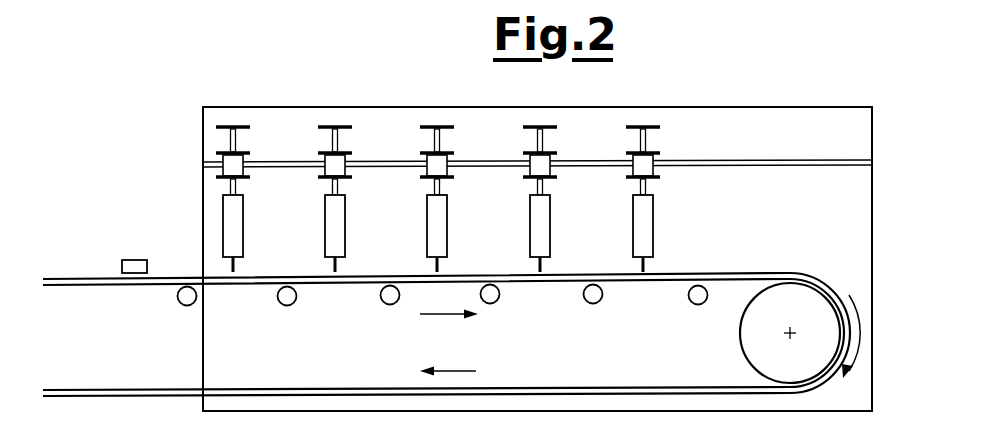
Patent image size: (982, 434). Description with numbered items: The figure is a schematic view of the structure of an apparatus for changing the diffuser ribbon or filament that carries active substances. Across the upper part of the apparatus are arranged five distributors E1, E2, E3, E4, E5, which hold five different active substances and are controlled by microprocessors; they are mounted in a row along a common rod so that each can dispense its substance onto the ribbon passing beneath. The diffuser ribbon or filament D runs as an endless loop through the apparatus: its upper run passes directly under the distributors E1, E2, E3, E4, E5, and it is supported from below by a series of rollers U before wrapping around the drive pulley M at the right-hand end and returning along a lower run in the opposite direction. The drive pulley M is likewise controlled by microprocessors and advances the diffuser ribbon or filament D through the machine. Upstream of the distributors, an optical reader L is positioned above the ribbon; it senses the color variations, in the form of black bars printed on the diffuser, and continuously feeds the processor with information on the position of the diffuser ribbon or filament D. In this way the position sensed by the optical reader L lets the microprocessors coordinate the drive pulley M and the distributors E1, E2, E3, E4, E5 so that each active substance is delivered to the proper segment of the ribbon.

The distributor E1 is at (222, 164).
The distributor E2 is at (332, 165).
The distributor E3 is at (433, 165).
The distributor E4 is at (533, 165).
The distributor E5 is at (653, 164).
The optical reader L is at (133, 260).
The diffuser ribbon or filament D is at (731, 274).
The drive pulley M is at (800, 310).
The rollers U is at (278, 297).